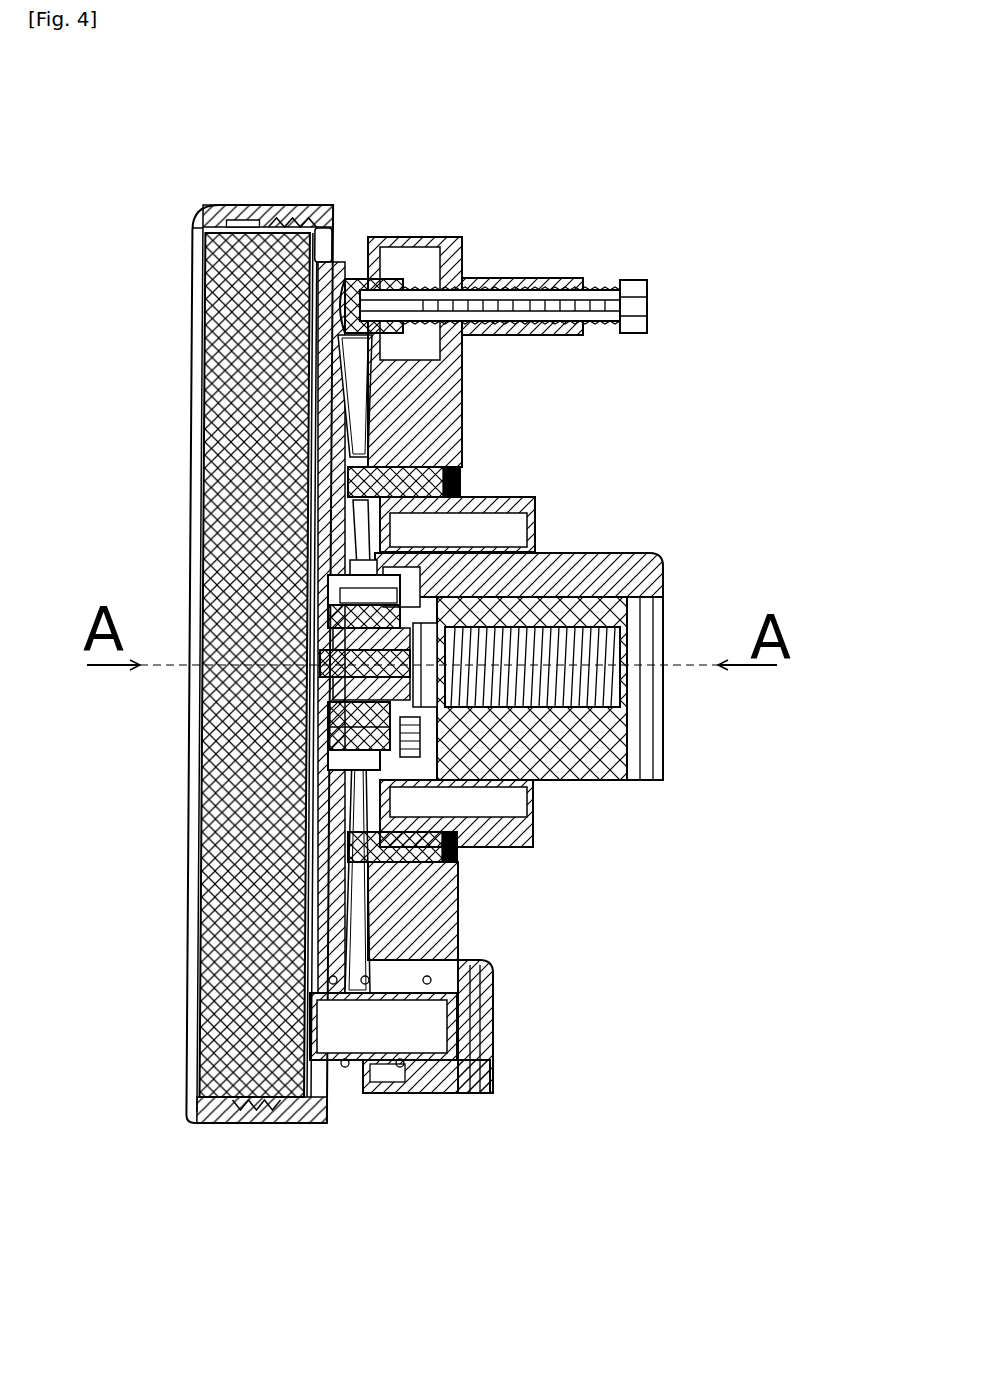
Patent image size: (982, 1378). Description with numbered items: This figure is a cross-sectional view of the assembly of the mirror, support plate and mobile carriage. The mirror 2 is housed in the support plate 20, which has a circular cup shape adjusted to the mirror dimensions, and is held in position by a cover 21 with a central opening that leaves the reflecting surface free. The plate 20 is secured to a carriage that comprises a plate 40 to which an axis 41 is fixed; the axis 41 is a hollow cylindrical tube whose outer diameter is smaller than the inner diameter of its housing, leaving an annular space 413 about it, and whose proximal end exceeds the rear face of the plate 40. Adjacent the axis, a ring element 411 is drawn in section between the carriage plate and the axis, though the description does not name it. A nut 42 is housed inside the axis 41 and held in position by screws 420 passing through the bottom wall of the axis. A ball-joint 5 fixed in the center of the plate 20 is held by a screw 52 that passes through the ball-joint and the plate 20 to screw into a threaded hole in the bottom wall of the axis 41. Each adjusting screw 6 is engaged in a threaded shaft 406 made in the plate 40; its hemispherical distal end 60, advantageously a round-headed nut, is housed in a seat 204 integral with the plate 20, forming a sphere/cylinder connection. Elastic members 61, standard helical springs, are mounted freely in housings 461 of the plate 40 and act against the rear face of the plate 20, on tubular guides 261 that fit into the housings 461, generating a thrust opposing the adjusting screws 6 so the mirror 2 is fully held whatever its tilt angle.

The mirror 2 is at (215, 973).
The support plate 20 is at (340, 235).
The cover 21 is at (253, 1113).
The seat 204 is at (350, 263).
The plate 40 is at (445, 405).
The threaded shaft 406 is at (567, 340).
The distal end 60 is at (390, 273).
The adjusting screw 6 is at (597, 283).
The bearing 411 is at (462, 462).
The annular space 413 is at (507, 523).
The axis 41 is at (593, 567).
The nut 42 is at (600, 737).
The screws 420 is at (490, 742).
The ball-joint 5 is at (390, 712).
The screw 52 is at (360, 690).
The guide 261 is at (370, 1030).
The elastic member 61 is at (400, 1063).
The housing 461 is at (457, 1063).